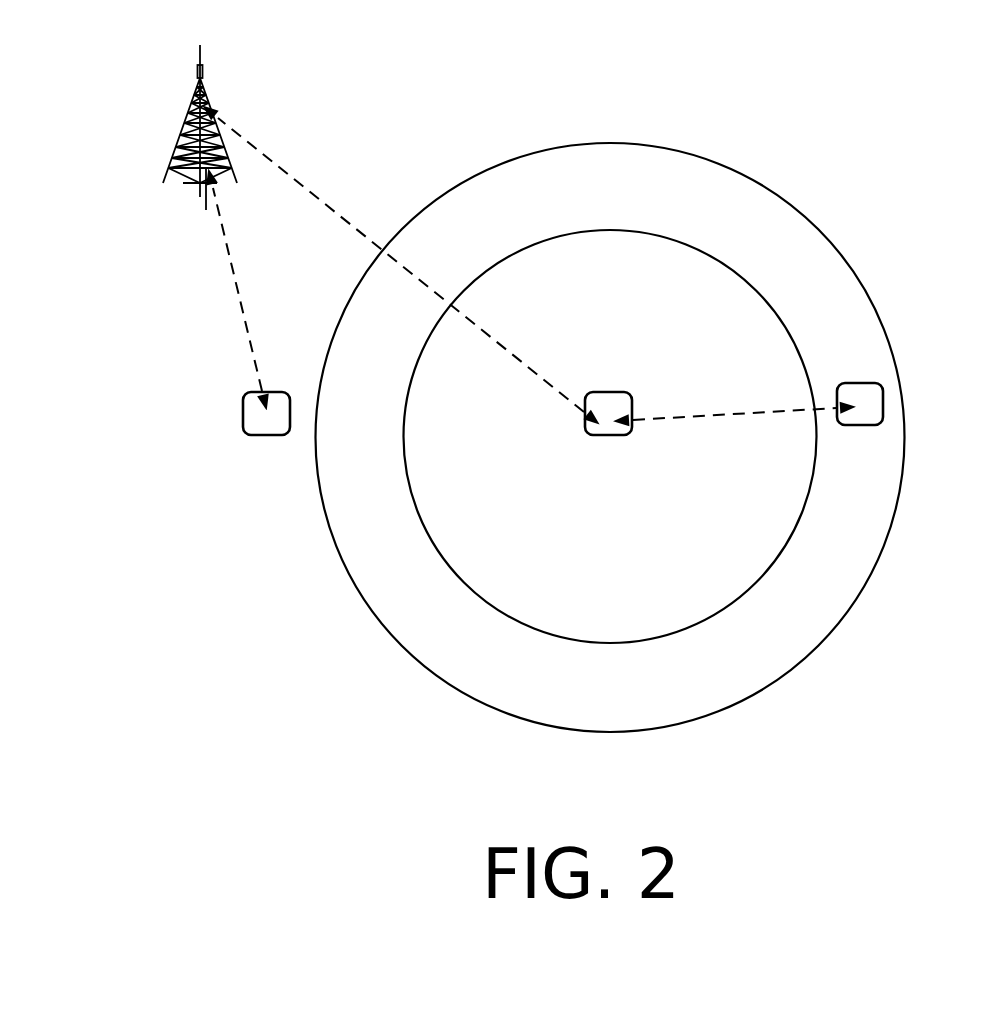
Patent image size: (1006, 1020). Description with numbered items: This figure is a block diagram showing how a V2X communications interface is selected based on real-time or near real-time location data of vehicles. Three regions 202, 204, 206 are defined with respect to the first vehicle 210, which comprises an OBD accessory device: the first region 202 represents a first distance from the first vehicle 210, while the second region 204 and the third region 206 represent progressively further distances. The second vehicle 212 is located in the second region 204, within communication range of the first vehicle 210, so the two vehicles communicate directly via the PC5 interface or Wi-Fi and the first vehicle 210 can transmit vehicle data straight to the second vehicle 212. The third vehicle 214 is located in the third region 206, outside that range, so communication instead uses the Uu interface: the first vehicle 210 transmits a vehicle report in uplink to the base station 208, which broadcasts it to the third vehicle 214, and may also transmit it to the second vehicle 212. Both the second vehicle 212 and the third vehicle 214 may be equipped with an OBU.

The first region 202 is at (633, 326).
The second region 204 is at (633, 198).
The third region 206 is at (633, 90).
The base station 208 is at (177, 155).
The first vehicle 210 is at (585, 415).
The second vehicle 212 is at (880, 391).
The third vehicle 214 is at (244, 402).